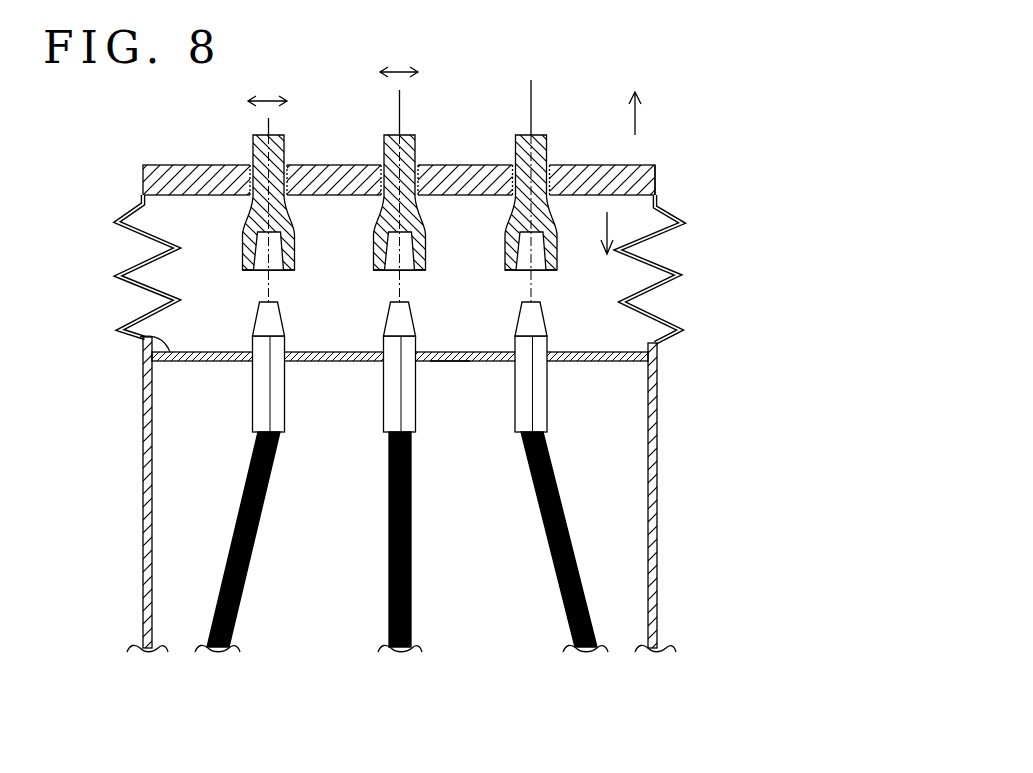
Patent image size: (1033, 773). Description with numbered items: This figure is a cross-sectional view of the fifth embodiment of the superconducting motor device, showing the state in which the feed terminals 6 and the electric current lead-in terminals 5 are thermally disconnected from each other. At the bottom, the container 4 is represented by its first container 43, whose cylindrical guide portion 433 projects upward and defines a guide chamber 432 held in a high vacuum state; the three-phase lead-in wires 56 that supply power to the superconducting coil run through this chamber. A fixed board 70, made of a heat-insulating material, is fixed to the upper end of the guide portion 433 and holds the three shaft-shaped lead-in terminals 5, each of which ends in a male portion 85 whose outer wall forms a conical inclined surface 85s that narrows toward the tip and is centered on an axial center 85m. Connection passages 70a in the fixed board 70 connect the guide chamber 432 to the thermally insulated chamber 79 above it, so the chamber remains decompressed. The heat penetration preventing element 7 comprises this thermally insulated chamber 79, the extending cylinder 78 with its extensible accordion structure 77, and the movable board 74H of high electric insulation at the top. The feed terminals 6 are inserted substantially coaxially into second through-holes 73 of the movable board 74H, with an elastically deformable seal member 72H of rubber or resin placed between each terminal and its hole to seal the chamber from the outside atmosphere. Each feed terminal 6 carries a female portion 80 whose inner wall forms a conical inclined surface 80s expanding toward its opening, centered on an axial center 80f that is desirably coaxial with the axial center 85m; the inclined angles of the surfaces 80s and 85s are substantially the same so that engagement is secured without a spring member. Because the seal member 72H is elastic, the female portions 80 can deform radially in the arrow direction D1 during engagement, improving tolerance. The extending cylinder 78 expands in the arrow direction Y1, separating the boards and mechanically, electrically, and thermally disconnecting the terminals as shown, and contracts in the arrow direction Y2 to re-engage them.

The container 4 is at (382, 494).
The first container 43 is at (658, 590).
The guide chamber 432 is at (168, 427).
The guide portion 433 is at (143, 453).
The electric current lead-in terminal 5 is at (353, 471).
The electric current lead-in wire 56 is at (243, 490).
The feed terminal 6 is at (253, 138).
The heat penetration preventing element 7 is at (409, 277).
The fixed board 70 is at (140, 337).
The connection passage 70a is at (455, 361).
The seal member 72H is at (251, 168).
The second through-hole 73 is at (297, 175).
The movable board 74H is at (655, 168).
The accordion structure 77 is at (150, 238).
The extending cylinder 78 is at (116, 220).
The thermally insulated chamber 79 is at (160, 290).
The female portion 80 is at (276, 270).
The axial center of female portion 80f is at (274, 126).
The inclined surface of female portion 80s is at (262, 254).
The male portion 85 is at (286, 329).
The inclined surface of male portion 85s is at (258, 316).
The axial center of male portion 85m is at (270, 403).
The arrow direction D1 is at (267, 100).
The arrow direction Y1 is at (640, 113).
The arrow direction Y2 is at (606, 228).